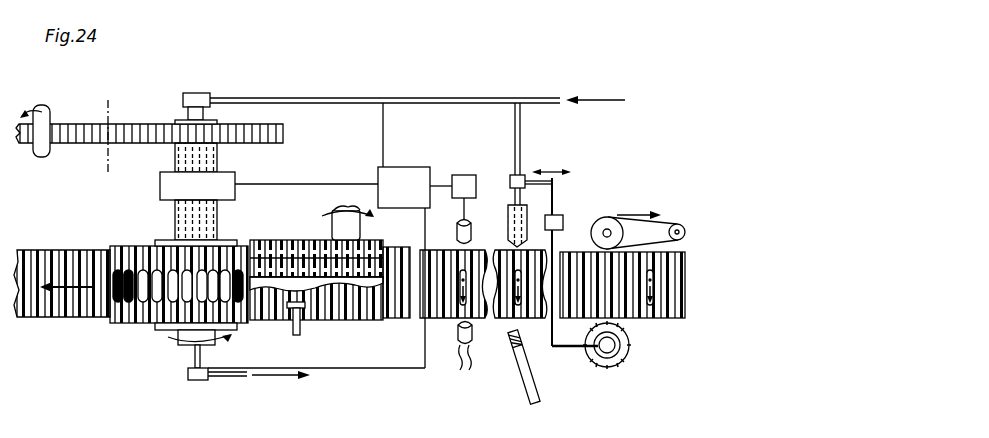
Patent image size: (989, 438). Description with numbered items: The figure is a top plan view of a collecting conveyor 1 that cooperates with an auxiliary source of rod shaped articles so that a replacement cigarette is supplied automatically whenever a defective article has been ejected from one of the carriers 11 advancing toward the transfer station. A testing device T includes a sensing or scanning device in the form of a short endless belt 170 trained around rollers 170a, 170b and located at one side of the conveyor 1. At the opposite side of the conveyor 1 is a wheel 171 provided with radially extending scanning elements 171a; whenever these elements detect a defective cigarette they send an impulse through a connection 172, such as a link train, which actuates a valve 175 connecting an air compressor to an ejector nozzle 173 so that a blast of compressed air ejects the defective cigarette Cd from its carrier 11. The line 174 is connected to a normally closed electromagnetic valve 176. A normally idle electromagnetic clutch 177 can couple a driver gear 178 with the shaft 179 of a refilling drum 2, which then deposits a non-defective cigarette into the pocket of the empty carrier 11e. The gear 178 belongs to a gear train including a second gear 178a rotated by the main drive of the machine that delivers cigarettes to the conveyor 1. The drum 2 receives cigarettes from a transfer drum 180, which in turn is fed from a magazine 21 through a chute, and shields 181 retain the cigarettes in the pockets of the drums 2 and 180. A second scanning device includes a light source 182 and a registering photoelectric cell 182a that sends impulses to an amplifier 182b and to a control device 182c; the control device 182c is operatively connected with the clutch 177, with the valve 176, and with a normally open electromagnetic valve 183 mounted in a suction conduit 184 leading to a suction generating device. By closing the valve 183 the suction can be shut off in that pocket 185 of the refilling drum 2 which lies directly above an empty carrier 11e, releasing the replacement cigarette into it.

The collecting conveyor 1 is at (363, 313).
The refilling drum 2 is at (124, 338).
The carrier 11 is at (650, 320).
The empty carrier 11e is at (520, 320).
The magazine 21 is at (283, 240).
The endless belt 170 is at (675, 223).
The roller 170a is at (600, 220).
The roller 170b is at (680, 225).
The wheel 171 is at (621, 365).
The scanning elements 171a is at (631, 344).
The connection 172 is at (555, 178).
The ejector nozzle 173 is at (509, 224).
The line 174 is at (521, 108).
The valve 175 is at (510, 179).
The electromagnetic valve 176 is at (200, 93).
The electromagnetic clutch 177 is at (237, 170).
The driver gear 178 is at (285, 134).
The second gear 178a is at (58, 148).
The shaft 179 is at (217, 228).
The transfer drum 180 is at (395, 247).
The shields 181 is at (301, 326).
The light source 182 is at (473, 336).
The photoelectric cell 182a is at (472, 233).
The amplifier 182b is at (455, 176).
The control device 182c is at (379, 172).
The electromagnetic valve 183 is at (193, 382).
The suction conduit 184 is at (233, 380).
The pocket 185 is at (128, 246).
The testing device T is at (643, 182).
The defective cigarette Cd is at (536, 405).